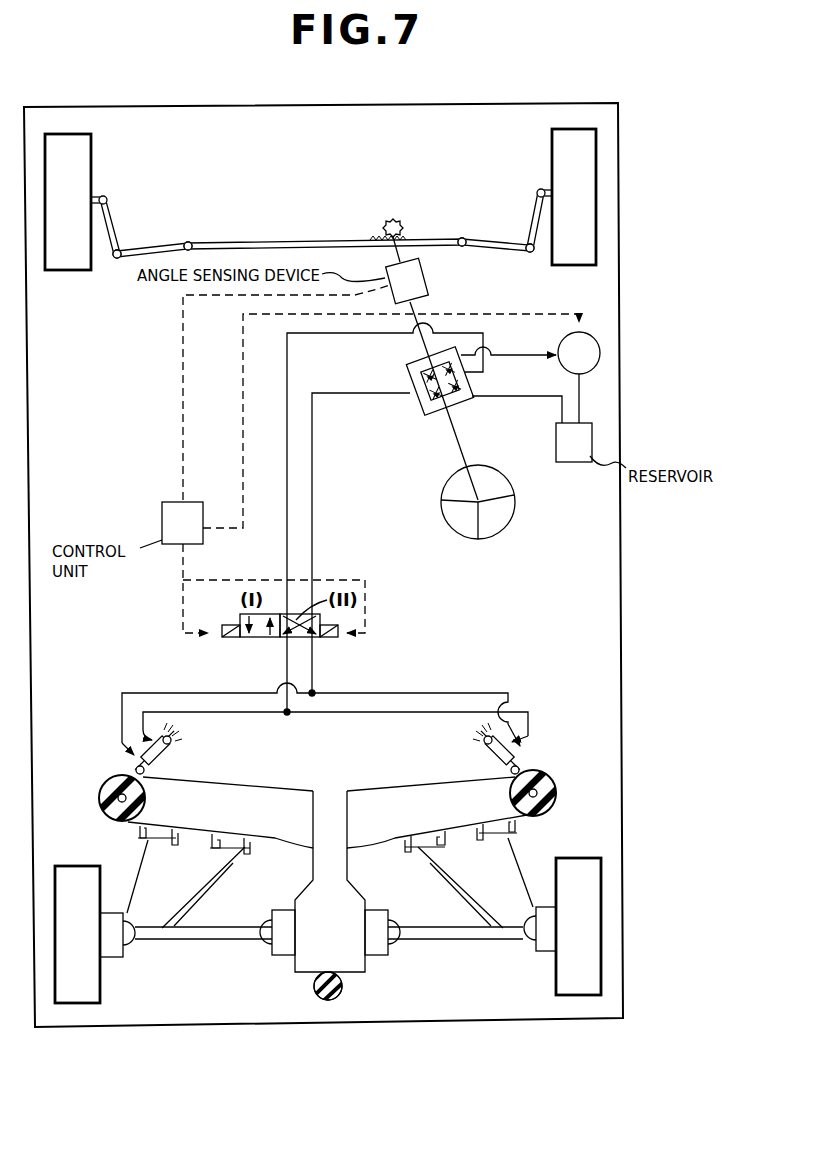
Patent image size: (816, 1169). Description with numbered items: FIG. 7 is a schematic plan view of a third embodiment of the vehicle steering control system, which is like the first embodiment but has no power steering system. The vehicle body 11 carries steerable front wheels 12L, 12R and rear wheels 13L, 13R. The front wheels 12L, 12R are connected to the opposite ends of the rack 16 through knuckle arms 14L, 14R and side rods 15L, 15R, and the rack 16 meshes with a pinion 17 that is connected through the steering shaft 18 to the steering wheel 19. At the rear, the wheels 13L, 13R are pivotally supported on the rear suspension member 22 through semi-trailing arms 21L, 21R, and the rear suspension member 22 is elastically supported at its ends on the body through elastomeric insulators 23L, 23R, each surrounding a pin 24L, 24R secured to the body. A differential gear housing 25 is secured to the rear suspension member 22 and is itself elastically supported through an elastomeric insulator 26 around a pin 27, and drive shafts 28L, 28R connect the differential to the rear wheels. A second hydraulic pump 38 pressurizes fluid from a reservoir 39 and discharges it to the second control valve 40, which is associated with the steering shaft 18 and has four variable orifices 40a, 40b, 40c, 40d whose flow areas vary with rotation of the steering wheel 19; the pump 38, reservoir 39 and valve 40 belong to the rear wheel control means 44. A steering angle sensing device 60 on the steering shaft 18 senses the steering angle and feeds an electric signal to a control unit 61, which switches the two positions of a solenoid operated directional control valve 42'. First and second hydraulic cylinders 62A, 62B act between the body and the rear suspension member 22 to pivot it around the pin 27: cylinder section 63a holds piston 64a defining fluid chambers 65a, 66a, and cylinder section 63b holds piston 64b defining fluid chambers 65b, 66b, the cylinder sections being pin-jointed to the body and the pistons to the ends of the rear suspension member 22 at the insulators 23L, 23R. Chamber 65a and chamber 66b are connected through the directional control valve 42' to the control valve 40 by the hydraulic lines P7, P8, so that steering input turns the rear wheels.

The vehicle body 11 is at (180, 106).
The front wheel 12L is at (75, 137).
The front wheel 12R is at (575, 135).
The rear wheel 13L is at (95, 1005).
The rear wheel 13R is at (584, 997).
The knuckle arm 14L is at (112, 214).
The knuckle arm 14R is at (535, 204).
The side rod 15L is at (153, 244).
The side rod 15R is at (478, 239).
The rack 16 is at (227, 241).
The pinion 17 is at (392, 220).
The steering shaft 18 is at (423, 308).
The steering wheel 19 is at (507, 524).
The semi-trailing arm 21L is at (217, 899).
The semi-trailing arm 21R is at (462, 888).
The rear suspension member 22 is at (280, 805).
The elastomeric insulator 23L is at (97, 793).
The elastomeric insulator 23R is at (551, 783).
The pin 24L is at (118, 795).
The pin 24R is at (540, 786).
The differential gear housing 25 is at (332, 800).
The elastomeric insulator 26 is at (322, 1000).
The pin 27 is at (337, 1000).
The drive shaft 28L is at (225, 945).
The drive shaft 28R is at (472, 935).
The second hydraulic pump 38 is at (600, 354).
The reservoir 39 is at (556, 441).
The second control valve 40 is at (421, 420).
The variable orifice 40a is at (412, 376).
The variable orifice 40b is at (420, 398).
The variable orifice 40c is at (468, 373).
The variable orifice 40d is at (456, 395).
The solenoid operated directional control valve 42' is at (271, 646).
The rear wheel control means 44 is at (158, 688).
The steering angle sensing device 60 is at (428, 281).
The control unit 61 is at (162, 514).
The first hydraulic cylinder 62A is at (161, 744).
The second hydraulic cylinder 62B is at (479, 733).
The cylinder section 63a is at (172, 746).
The cylinder section 63b is at (493, 738).
The piston 64a is at (168, 718).
The piston 64b is at (497, 753).
The first fluid chamber 65a is at (163, 754).
The fluid chamber 65b is at (492, 752).
The second fluid chamber 66a is at (150, 764).
The fluid chamber 66b is at (505, 764).
The hydraulic line P7 is at (288, 490).
The hydraulic line P8 is at (313, 449).